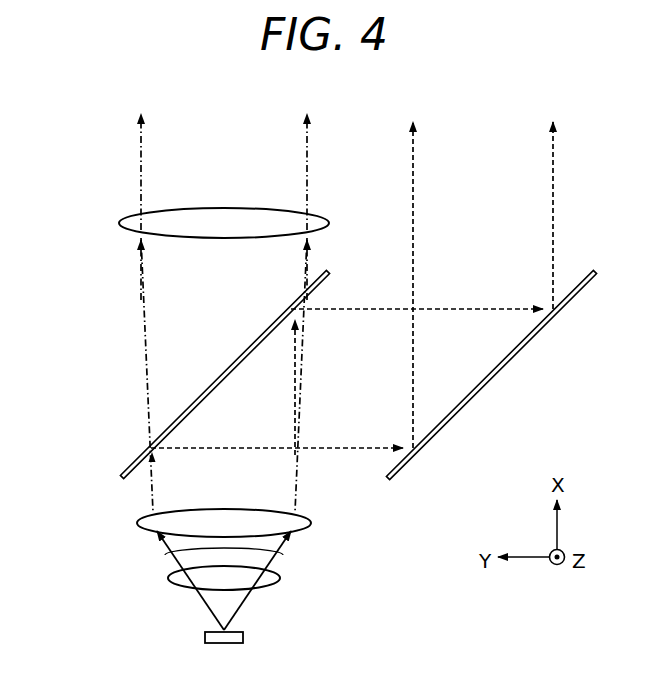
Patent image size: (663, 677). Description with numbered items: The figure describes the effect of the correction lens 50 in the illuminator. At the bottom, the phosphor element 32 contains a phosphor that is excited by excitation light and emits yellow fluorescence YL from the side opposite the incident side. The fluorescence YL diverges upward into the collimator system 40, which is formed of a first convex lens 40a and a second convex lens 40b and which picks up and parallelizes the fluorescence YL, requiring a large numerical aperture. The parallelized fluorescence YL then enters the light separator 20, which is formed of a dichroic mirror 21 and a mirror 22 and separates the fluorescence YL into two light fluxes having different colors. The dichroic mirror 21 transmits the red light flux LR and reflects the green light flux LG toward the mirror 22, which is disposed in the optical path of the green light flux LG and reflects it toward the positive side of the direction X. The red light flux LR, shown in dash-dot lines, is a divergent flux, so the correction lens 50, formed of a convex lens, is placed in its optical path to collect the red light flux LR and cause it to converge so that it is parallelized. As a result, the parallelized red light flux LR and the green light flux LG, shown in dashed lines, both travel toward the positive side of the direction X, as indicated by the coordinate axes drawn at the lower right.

The light separator 20 is at (312, 374).
The dichroic mirror 21 is at (218, 380).
The mirror 22 is at (456, 408).
The phosphor element 32 is at (205, 638).
The collimator system 40 is at (169, 561).
The first convex lens 40a is at (183, 592).
The second convex lens 40b is at (151, 533).
The correction lens 50 is at (136, 218).
The red light flux LR is at (307, 141).
The green light flux LG is at (413, 167).
The fluorescence YL is at (283, 553).